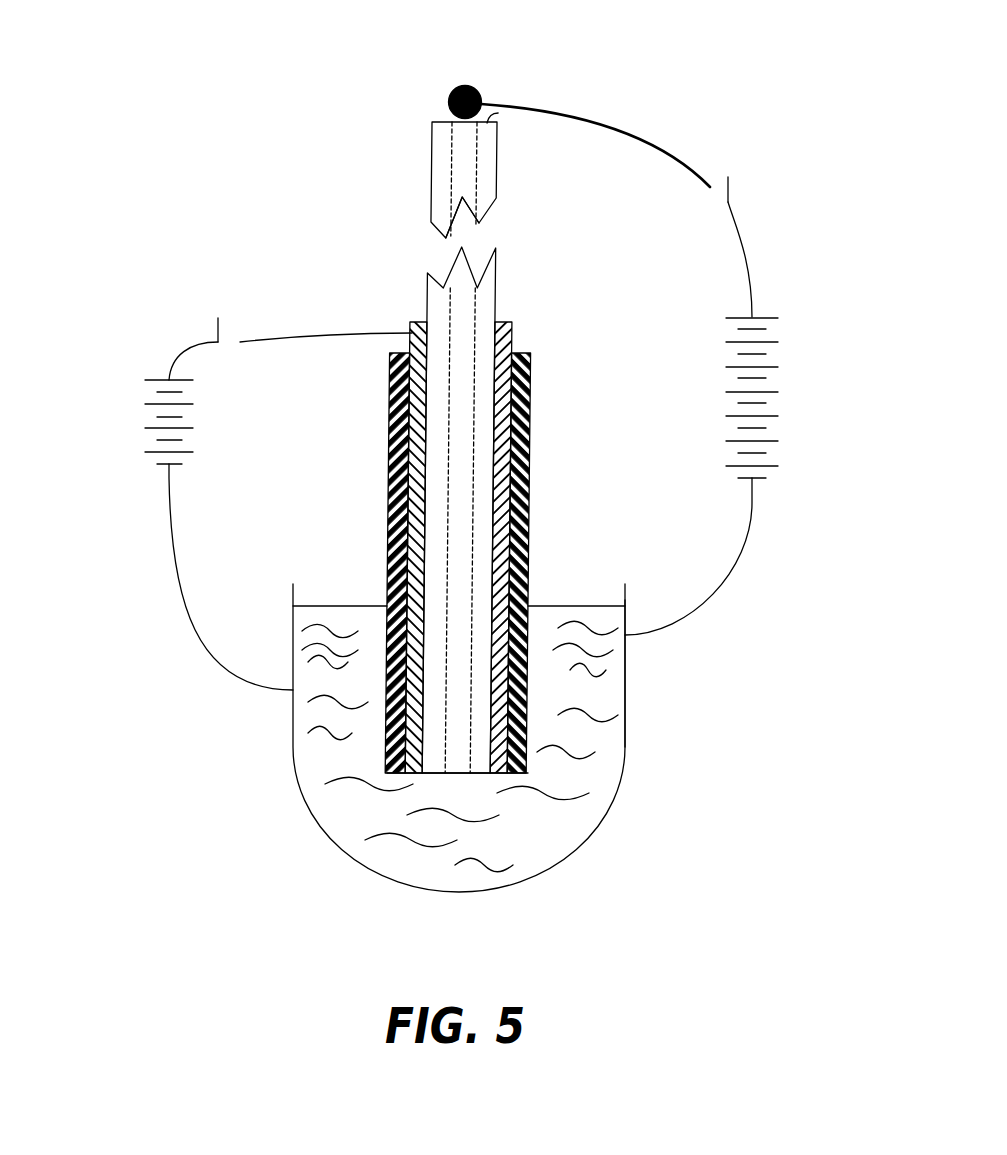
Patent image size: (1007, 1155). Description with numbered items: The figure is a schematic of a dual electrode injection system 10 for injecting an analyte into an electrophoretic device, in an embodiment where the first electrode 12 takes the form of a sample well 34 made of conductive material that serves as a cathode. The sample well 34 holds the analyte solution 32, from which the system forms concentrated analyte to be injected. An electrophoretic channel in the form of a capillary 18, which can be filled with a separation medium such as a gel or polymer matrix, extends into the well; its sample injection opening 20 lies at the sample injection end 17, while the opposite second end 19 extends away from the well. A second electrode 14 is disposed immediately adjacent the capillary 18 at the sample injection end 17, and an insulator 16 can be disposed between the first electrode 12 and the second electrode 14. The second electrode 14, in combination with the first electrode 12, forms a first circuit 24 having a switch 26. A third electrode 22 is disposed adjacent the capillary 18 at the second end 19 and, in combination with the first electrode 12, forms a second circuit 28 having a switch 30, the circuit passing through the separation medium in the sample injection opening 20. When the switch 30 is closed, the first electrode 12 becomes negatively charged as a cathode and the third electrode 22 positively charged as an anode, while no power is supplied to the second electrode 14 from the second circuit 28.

The system 10 is at (264, 86).
The first electrode 12 is at (292, 714).
The second electrode 14 is at (415, 319).
The insulator 16 is at (391, 393).
The sample injection end 17 is at (477, 774).
The capillary 18 is at (438, 148).
The second end 19 is at (500, 114).
The sample injection opening 20 is at (460, 196).
The third electrode 22 is at (478, 86).
The first circuit 24 is at (132, 420).
The switch 26 is at (216, 334).
The second circuit 28 is at (791, 405).
The switch 30 is at (730, 195).
The analyte solution 32 is at (306, 669).
The sample well 34 is at (625, 692).